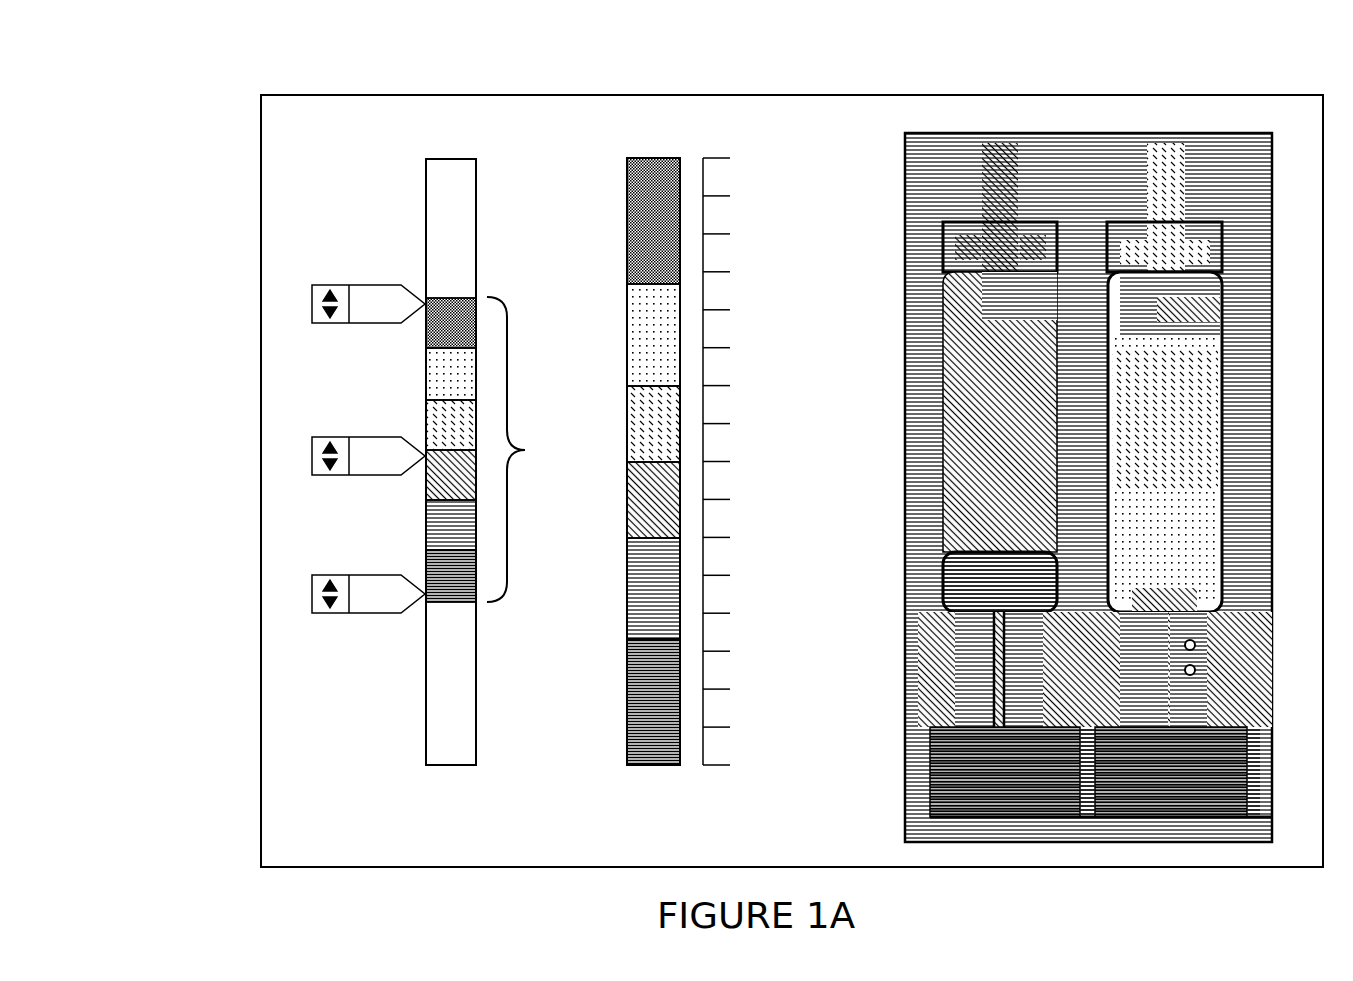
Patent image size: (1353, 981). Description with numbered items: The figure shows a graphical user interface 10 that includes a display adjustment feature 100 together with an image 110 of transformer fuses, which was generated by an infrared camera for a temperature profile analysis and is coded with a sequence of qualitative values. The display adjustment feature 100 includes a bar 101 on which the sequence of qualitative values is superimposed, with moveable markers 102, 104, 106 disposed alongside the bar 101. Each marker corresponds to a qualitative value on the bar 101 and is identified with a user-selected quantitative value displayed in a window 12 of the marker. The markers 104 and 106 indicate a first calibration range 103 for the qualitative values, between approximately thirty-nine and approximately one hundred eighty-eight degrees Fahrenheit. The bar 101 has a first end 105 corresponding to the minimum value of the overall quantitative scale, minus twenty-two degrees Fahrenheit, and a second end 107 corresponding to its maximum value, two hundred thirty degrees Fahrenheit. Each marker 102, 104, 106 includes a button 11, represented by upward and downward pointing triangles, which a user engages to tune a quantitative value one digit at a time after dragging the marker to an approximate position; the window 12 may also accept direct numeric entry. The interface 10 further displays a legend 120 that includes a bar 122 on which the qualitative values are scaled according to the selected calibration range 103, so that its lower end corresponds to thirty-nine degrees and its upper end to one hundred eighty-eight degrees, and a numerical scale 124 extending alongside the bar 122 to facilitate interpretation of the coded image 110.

The graphical user interface 10 is at (323, 82).
The display adjustment feature 100 is at (387, 195).
The bar 101 is at (463, 235).
The marker 102 is at (372, 435).
The first calibration range 103 is at (534, 449).
The marker 104 is at (307, 681).
The first end 105 is at (438, 765).
The marker 106 is at (360, 283).
The second end 107 is at (450, 158).
The button 11 is at (323, 600).
The window 12 is at (375, 595).
The image 110 is at (1222, 118).
The legend 120 is at (625, 482).
The bar 122 is at (628, 715).
The numerical scale 124 is at (778, 322).